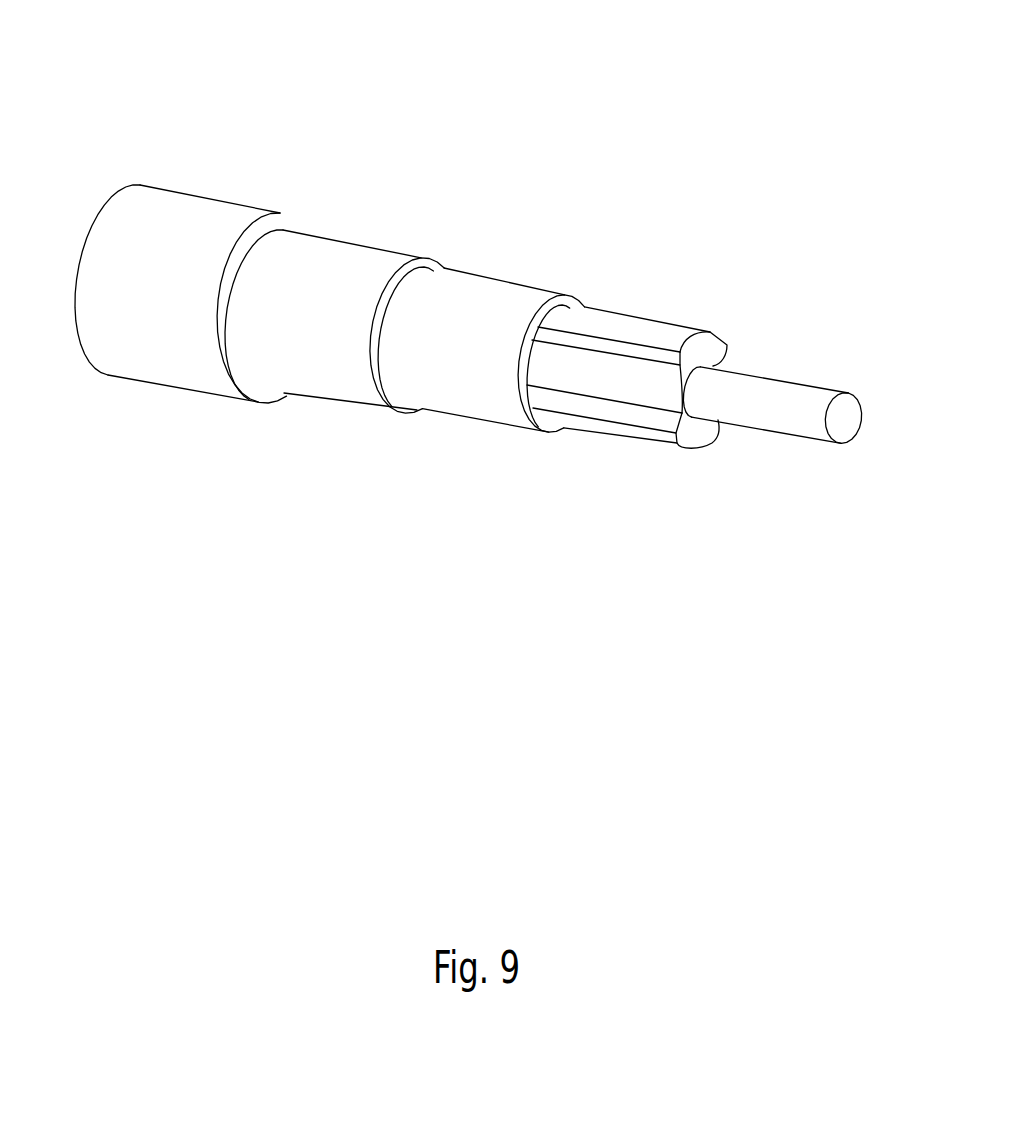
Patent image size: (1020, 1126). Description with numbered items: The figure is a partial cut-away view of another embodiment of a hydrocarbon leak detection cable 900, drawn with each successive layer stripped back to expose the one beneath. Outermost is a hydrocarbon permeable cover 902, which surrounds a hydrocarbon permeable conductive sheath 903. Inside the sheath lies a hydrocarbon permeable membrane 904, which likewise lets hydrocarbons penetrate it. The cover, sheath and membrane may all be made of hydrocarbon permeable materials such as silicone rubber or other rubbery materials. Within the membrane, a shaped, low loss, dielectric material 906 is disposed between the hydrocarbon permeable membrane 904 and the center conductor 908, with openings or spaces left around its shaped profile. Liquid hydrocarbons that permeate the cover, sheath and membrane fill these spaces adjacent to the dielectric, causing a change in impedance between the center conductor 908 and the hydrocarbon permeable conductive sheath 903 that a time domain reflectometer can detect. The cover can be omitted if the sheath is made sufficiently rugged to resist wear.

The hydrocarbon leak detection cable 900 is at (609, 121).
The hydrocarbon permeable cover 902 is at (150, 350).
The hydrocarbon permeable conductive sheath 903 is at (354, 268).
The hydrocarbon permeable membrane 904 is at (455, 403).
The shaped, low loss, dielectric material 906 is at (647, 332).
The center conductor 908 is at (770, 420).